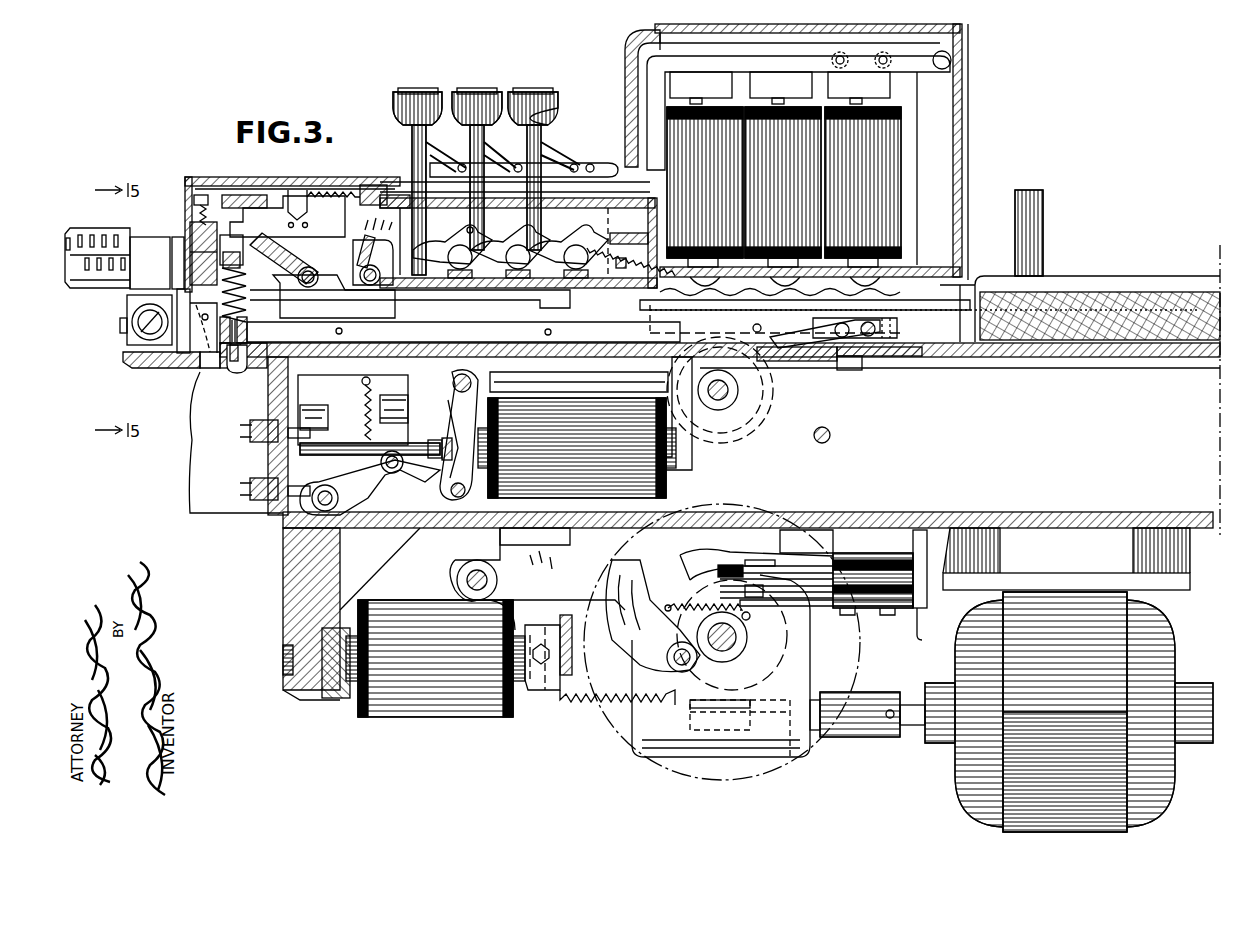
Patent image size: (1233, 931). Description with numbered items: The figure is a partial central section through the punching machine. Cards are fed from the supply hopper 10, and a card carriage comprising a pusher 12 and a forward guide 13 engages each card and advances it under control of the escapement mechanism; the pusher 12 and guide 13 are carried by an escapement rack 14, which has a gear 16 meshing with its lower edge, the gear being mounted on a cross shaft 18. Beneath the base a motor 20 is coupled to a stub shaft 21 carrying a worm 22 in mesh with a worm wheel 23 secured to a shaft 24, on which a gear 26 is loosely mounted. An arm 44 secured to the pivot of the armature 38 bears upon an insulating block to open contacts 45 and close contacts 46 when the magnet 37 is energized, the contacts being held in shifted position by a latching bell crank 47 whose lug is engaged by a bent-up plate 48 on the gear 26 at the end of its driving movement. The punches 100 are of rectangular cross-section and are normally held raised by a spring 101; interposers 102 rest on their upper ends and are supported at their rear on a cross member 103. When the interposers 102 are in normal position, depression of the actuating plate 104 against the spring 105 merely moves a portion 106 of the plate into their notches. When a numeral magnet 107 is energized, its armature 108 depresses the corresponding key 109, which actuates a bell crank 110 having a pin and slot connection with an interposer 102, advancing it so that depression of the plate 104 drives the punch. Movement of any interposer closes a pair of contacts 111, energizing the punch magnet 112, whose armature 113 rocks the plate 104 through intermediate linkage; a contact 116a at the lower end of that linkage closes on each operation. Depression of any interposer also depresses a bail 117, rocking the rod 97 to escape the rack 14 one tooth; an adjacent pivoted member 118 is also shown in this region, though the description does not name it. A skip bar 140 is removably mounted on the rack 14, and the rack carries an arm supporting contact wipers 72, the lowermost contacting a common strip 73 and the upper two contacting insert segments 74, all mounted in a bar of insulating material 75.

The supply hopper 10 is at (704, 362).
The pusher 12 is at (796, 345).
The forward guide 13 is at (192, 342).
The escapement rack 14 is at (888, 332).
The gear 16 is at (758, 430).
The cross shaft 18 is at (722, 408).
The motor 20 is at (1018, 770).
The stub shaft 21 is at (785, 745).
The worm 22 is at (700, 725).
The worm wheel 23 is at (775, 670).
The shaft 24 is at (722, 650).
The gear 26 is at (740, 778).
The magnet 37 is at (428, 700).
The armature 38 is at (536, 688).
The arm 44 is at (535, 568).
The contacts 45 is at (742, 572).
The contacts 46 is at (742, 597).
The latching bell crank 47 is at (640, 670).
The bent-up plate 48 is at (582, 708).
The contact wipers 72 is at (176, 245).
The common strip of conducting material 73 is at (95, 283).
The insert segments 74 is at (93, 238).
The bar of insulating material 75 is at (72, 238).
The rod 97 is at (340, 289).
The punches 100 is at (258, 350).
The spring 101 is at (246, 288).
The interposers 102 is at (272, 200).
The cross member 103 is at (622, 232).
The actuating plate 104 is at (250, 196).
The spring 105 is at (200, 208).
The portion of the plate 106 is at (215, 200).
The numeral magnet 107 is at (860, 160).
The armature 108 is at (650, 80).
The key 109 is at (520, 92).
The bell crank 110 is at (493, 245).
The pair of contacts 111 is at (400, 406).
The punch magnet 112 is at (672, 486).
The armature 113 is at (470, 412).
The contact 116a is at (300, 420).
The bail 117 is at (284, 245).
The pawl 118 is at (365, 246).
The skip bar 140 is at (906, 311).